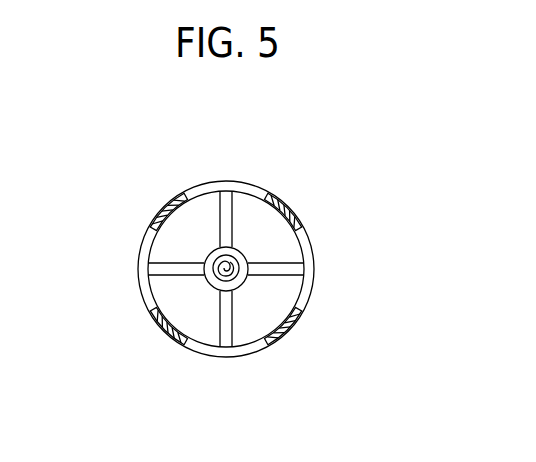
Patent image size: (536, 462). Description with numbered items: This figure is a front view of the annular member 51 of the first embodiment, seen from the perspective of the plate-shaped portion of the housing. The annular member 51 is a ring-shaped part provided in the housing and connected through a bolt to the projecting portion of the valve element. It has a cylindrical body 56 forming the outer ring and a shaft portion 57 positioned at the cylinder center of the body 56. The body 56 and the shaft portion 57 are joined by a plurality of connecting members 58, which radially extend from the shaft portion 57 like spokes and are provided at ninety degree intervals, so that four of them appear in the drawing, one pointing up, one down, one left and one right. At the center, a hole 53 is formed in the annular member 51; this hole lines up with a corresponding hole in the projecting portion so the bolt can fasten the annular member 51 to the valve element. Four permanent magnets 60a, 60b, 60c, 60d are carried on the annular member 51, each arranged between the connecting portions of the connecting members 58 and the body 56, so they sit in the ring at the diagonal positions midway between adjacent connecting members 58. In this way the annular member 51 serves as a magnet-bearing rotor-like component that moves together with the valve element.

The annular member 51 is at (313, 238).
The hole 53 is at (205, 266).
The body 56 is at (225, 187).
The shaft portion 57 is at (236, 283).
The connecting members 58 is at (165, 270).
The permanent magnet 60a is at (284, 335).
The permanent magnet 60b is at (282, 196).
The permanent magnet 60c is at (167, 197).
The permanent magnet 60d is at (170, 333).